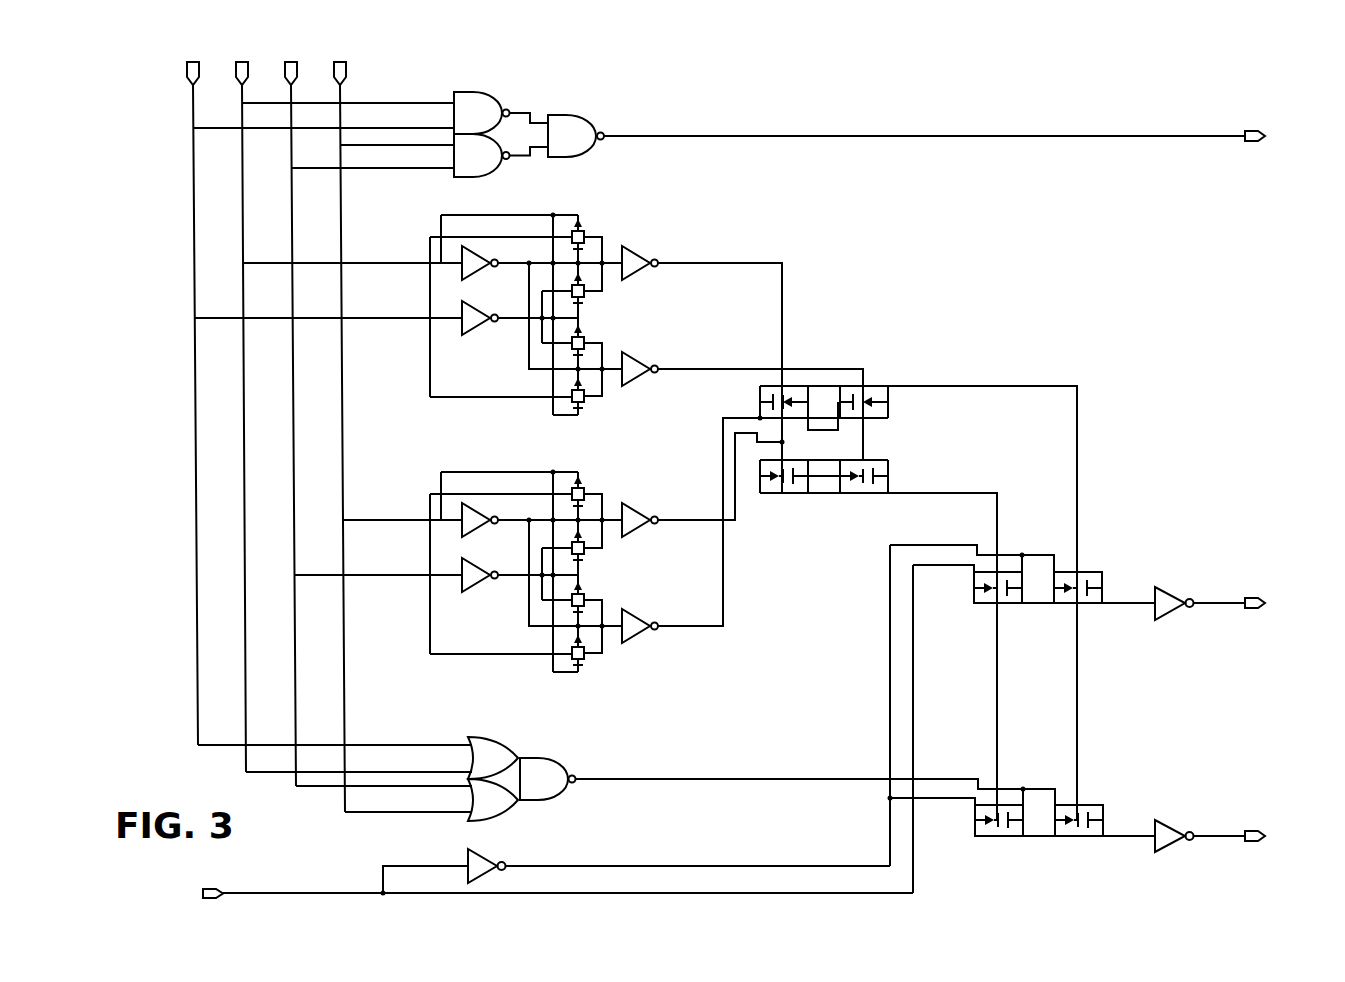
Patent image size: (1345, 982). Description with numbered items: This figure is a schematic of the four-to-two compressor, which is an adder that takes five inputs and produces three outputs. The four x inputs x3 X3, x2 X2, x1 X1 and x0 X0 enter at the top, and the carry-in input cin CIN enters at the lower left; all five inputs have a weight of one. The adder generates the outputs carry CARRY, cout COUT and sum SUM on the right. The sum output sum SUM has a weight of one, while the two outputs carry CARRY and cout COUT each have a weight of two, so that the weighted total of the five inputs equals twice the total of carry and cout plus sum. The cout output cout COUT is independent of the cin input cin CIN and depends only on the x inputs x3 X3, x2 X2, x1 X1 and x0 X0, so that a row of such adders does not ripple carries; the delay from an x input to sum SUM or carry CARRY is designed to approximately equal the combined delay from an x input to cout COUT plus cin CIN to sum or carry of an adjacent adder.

The input X3 is at (193, 59).
The input X2 is at (242, 59).
The input X1 is at (291, 59).
The input X0 is at (340, 59).
The cout output cout is at (1288, 135).
The sum output sum is at (1287, 603).
The carry output carry is at (1293, 836).
The cin input cin is at (193, 893).